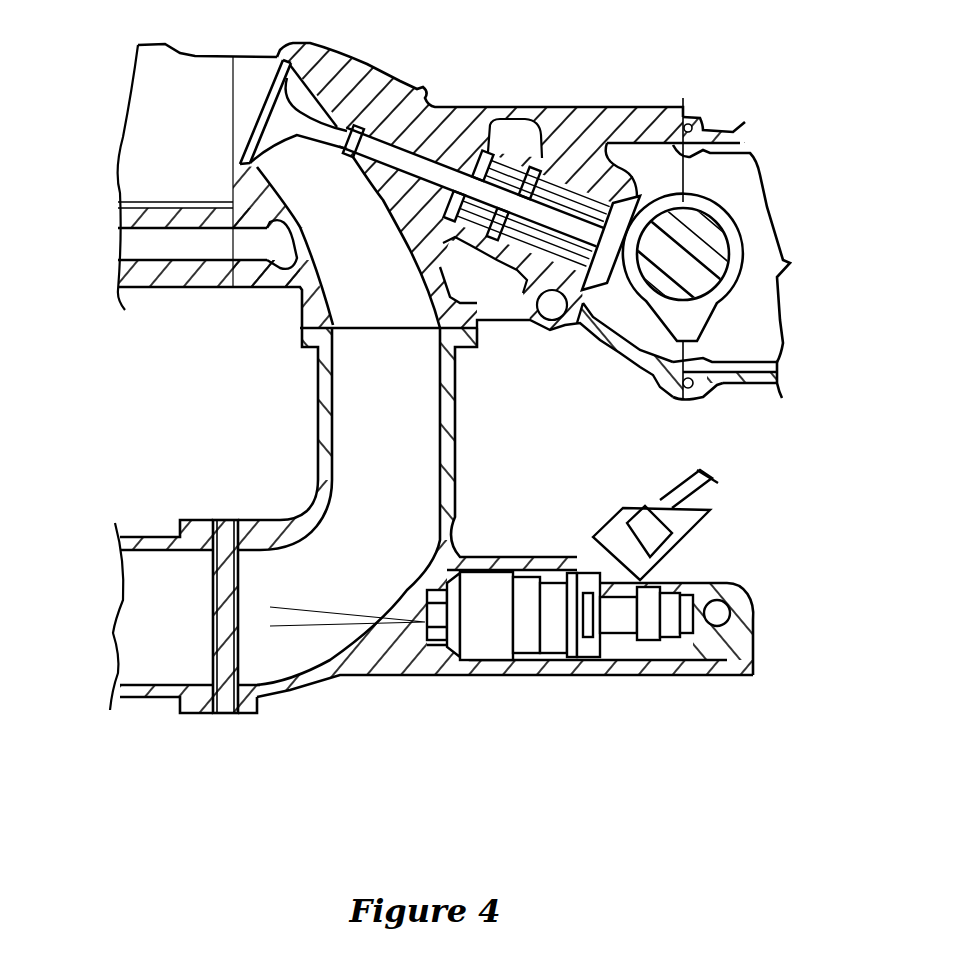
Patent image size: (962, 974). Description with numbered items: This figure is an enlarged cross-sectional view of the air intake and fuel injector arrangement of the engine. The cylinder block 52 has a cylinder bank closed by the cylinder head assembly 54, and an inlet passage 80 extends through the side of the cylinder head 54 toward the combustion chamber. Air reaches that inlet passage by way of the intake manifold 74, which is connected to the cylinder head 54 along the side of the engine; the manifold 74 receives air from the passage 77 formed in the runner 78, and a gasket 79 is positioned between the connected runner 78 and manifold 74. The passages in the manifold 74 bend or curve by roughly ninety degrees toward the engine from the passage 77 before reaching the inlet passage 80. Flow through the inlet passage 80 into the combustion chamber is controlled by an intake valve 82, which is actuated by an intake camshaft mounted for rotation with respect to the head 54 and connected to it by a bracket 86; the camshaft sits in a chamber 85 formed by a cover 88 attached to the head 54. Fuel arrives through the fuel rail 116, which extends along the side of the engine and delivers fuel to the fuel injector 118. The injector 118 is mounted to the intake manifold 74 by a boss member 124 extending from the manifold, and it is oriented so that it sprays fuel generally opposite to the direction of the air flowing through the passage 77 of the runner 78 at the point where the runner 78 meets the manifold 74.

The cylinder block 52 is at (153, 287).
The cylinder head assembly 54 is at (567, 117).
The intake manifold 74 is at (327, 440).
The passage 77 is at (137, 607).
The runner 78 is at (143, 700).
The gasket 79 is at (222, 703).
The inlet passage 80 is at (350, 270).
The intake valve 82 is at (268, 122).
The chamber 85 is at (727, 340).
The bracket 86 is at (700, 240).
The cover 88 is at (733, 137).
The fuel rail 116 is at (747, 597).
The fuel injector 118 is at (553, 593).
The boss member 124 is at (557, 667).